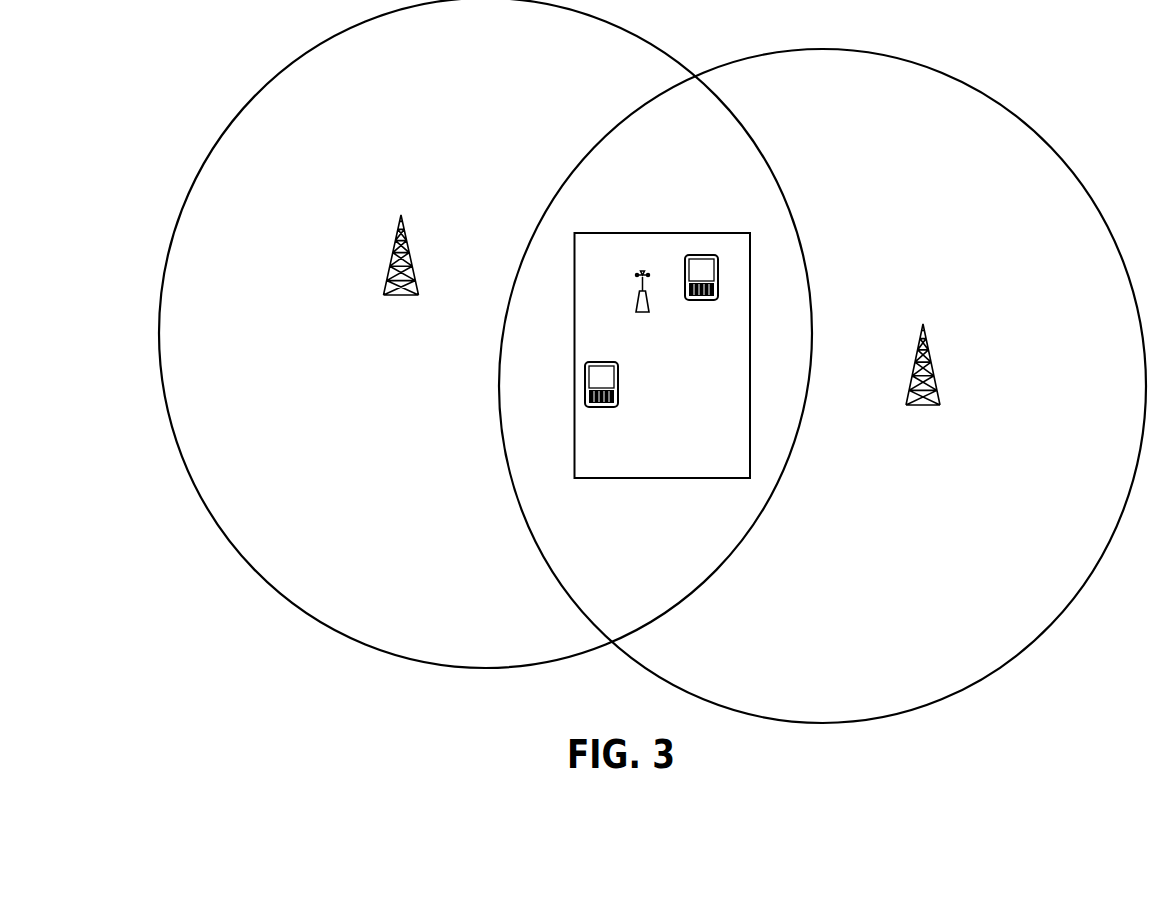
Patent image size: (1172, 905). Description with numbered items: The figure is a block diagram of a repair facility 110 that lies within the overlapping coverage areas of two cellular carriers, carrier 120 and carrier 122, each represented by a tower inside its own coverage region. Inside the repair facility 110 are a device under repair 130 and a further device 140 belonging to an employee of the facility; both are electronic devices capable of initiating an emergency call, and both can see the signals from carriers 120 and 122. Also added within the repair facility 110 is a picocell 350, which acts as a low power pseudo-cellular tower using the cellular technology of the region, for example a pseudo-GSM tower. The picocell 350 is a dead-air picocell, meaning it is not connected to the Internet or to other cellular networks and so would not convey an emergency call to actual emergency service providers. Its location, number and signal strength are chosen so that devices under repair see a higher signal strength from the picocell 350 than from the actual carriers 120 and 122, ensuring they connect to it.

The repair facility 110 is at (663, 355).
The carrier 120 is at (392, 274).
The carrier 122 is at (915, 383).
The device under repair 130 is at (718, 277).
The device 140 is at (585, 387).
The picocell 350 is at (646, 320).